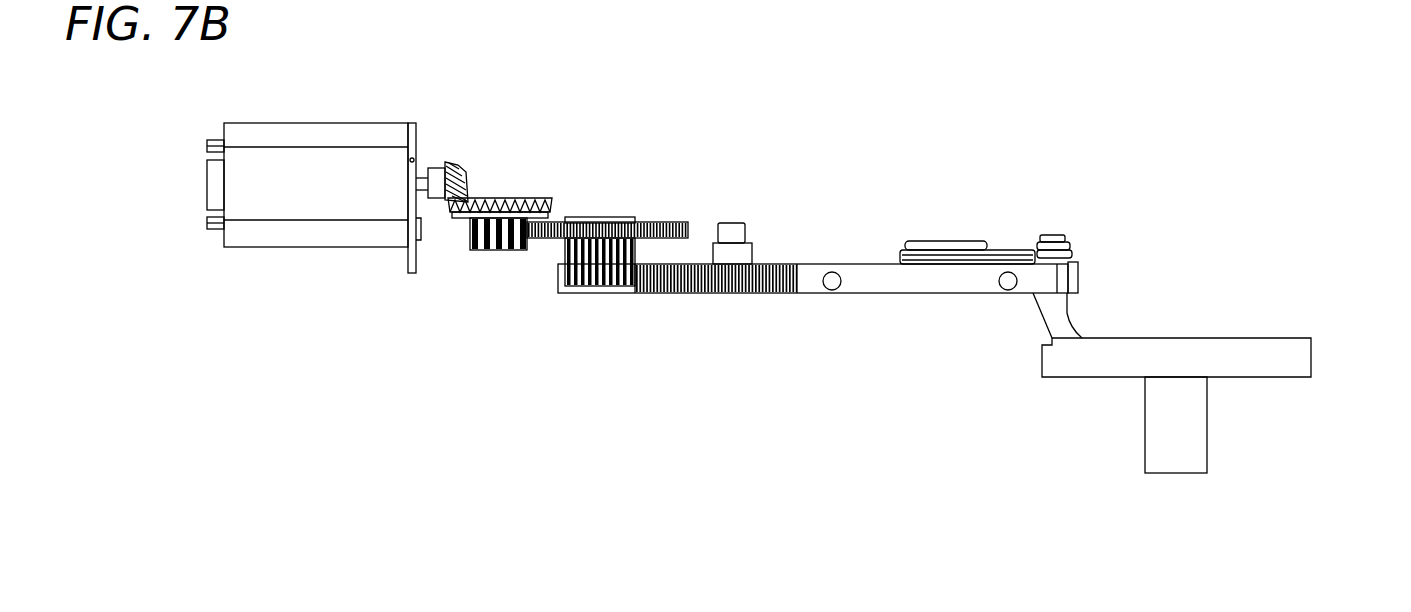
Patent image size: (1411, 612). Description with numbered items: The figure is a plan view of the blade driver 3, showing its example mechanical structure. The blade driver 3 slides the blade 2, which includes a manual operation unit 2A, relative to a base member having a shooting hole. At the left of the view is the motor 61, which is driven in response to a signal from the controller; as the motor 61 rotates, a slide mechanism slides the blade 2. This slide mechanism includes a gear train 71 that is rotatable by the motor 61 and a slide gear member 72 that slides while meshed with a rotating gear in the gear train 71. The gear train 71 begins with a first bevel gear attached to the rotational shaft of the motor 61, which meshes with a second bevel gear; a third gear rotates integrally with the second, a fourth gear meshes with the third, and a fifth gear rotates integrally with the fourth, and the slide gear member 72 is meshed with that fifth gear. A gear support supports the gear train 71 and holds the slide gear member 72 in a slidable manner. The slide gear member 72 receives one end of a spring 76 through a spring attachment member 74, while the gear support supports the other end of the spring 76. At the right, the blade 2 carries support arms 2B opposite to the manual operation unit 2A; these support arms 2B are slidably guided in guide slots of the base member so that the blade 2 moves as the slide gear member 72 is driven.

The motor 61 is at (316, 134).
The gear train 71 is at (692, 148).
The slide gear member 72 is at (852, 292).
The spring 76 is at (985, 240).
The spring attachment member 74 is at (1073, 256).
The support arms 2B is at (1075, 320).
The blade 2 is at (1300, 355).
The manual operation unit 2A is at (1200, 427).
The blade driver 3 is at (978, 133).